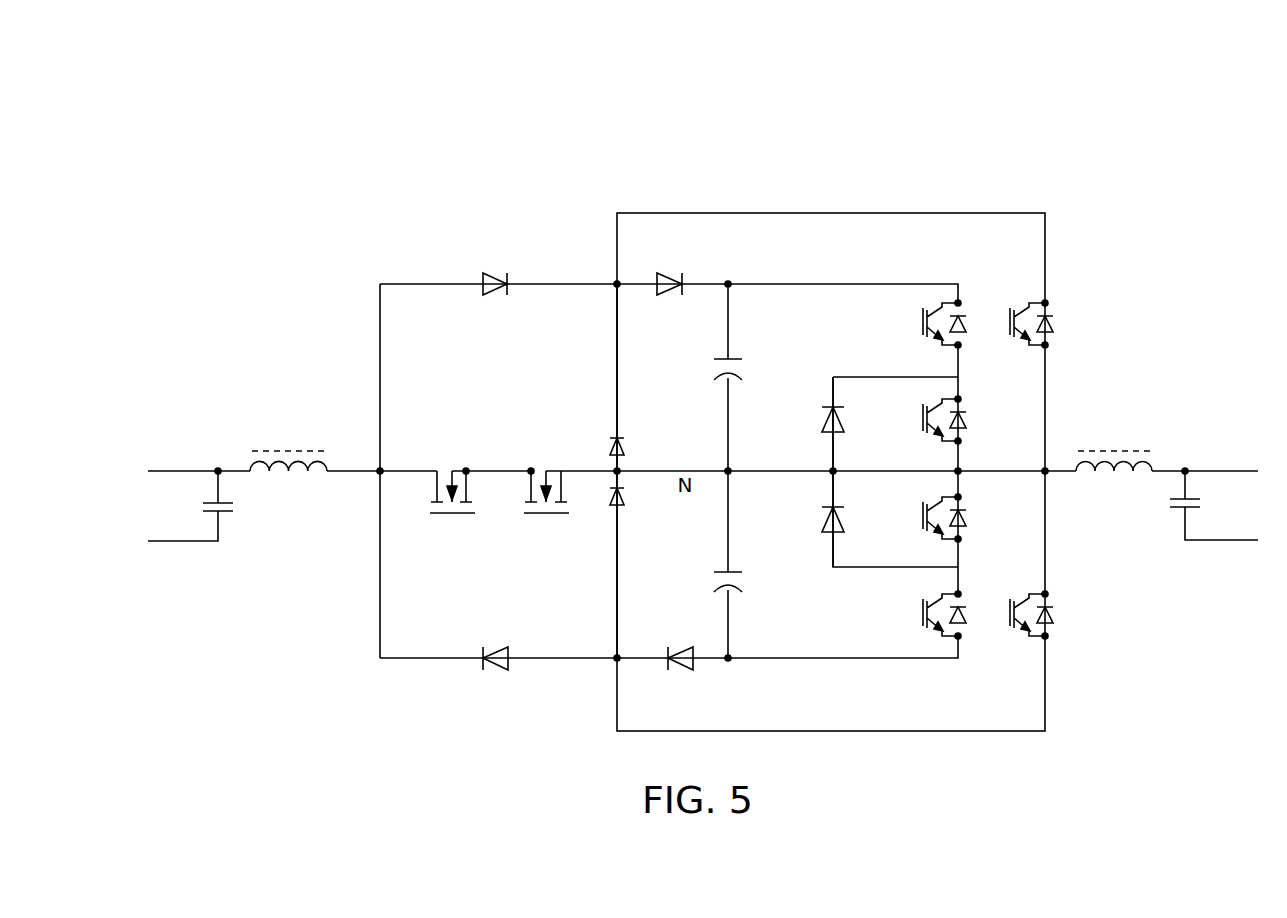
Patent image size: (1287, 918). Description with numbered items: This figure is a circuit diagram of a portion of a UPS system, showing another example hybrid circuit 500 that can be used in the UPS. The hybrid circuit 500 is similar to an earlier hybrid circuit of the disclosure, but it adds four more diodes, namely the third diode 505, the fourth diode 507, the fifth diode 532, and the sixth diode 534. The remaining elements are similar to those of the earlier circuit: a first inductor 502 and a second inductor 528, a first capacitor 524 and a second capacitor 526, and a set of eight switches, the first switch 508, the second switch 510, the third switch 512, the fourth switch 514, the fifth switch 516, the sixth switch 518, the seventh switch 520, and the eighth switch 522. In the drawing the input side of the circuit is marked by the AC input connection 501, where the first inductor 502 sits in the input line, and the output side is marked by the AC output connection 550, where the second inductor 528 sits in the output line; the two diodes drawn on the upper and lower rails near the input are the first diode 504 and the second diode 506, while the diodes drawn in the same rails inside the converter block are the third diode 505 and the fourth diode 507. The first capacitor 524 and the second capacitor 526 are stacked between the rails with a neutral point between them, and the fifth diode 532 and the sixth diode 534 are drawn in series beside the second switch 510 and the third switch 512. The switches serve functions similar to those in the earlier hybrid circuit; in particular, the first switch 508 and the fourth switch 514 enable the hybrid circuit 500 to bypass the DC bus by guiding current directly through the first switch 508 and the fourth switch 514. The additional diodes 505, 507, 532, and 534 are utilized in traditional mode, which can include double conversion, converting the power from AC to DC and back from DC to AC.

The hybrid circuit 500 is at (1140, 260).
The AC input 501 is at (163, 470).
The inductor L1 502 is at (290, 451).
The diode D1 504 is at (495, 266).
The diode D3 505 is at (672, 266).
The diode D2 506 is at (497, 672).
The diode D4 507 is at (680, 672).
The switch S1 508 is at (1058, 322).
The switch S2 510 is at (968, 414).
The switch S3 512 is at (968, 520).
The switch S4 514 is at (1058, 618).
The switch S5 516 is at (452, 536).
The switch S6 518 is at (547, 536).
The switch S7 520 is at (963, 310).
The switch S8 522 is at (965, 630).
The capacitor C1 524 is at (734, 351).
The capacitor C2 526 is at (738, 592).
The inductor L2 528 is at (1113, 449).
The diode D5 532 is at (820, 414).
The diode D6 534 is at (820, 514).
The AC output 550 is at (1218, 469).